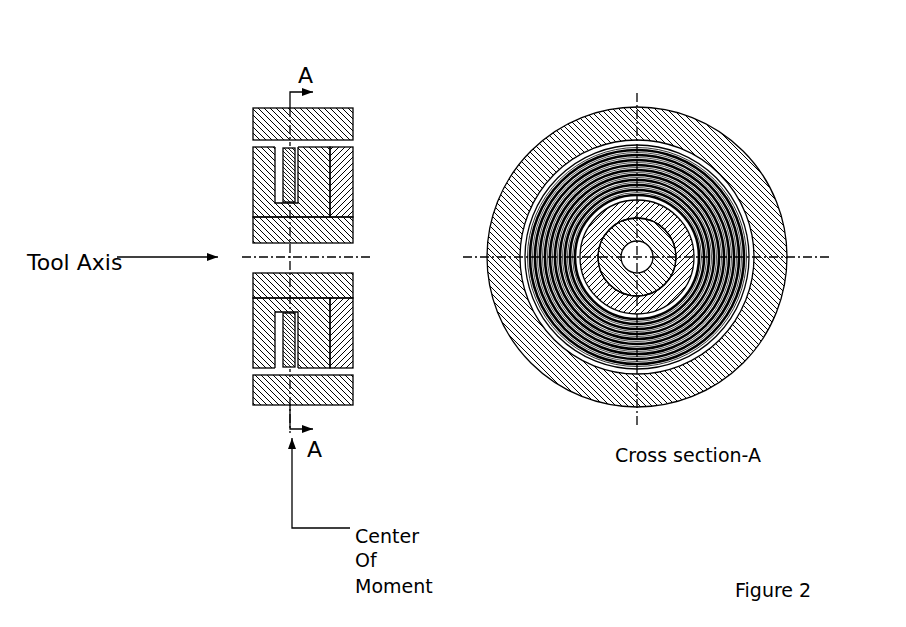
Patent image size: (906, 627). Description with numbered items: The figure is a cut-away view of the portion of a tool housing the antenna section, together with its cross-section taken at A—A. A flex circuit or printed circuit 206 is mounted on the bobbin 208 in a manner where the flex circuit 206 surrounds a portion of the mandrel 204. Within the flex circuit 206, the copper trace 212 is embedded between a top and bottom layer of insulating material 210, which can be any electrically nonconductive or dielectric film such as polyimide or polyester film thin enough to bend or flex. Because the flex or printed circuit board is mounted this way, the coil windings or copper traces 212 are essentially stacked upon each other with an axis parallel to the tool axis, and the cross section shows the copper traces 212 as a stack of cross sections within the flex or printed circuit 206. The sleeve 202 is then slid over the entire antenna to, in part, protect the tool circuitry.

The sleeve 202 is at (190, 473).
The mandrel 204 is at (612, 273).
The flex circuit 206 is at (517, 254).
The bobbin 208 is at (585, 275).
The insulating material 210 is at (700, 172).
The copper trace 212 is at (742, 232).